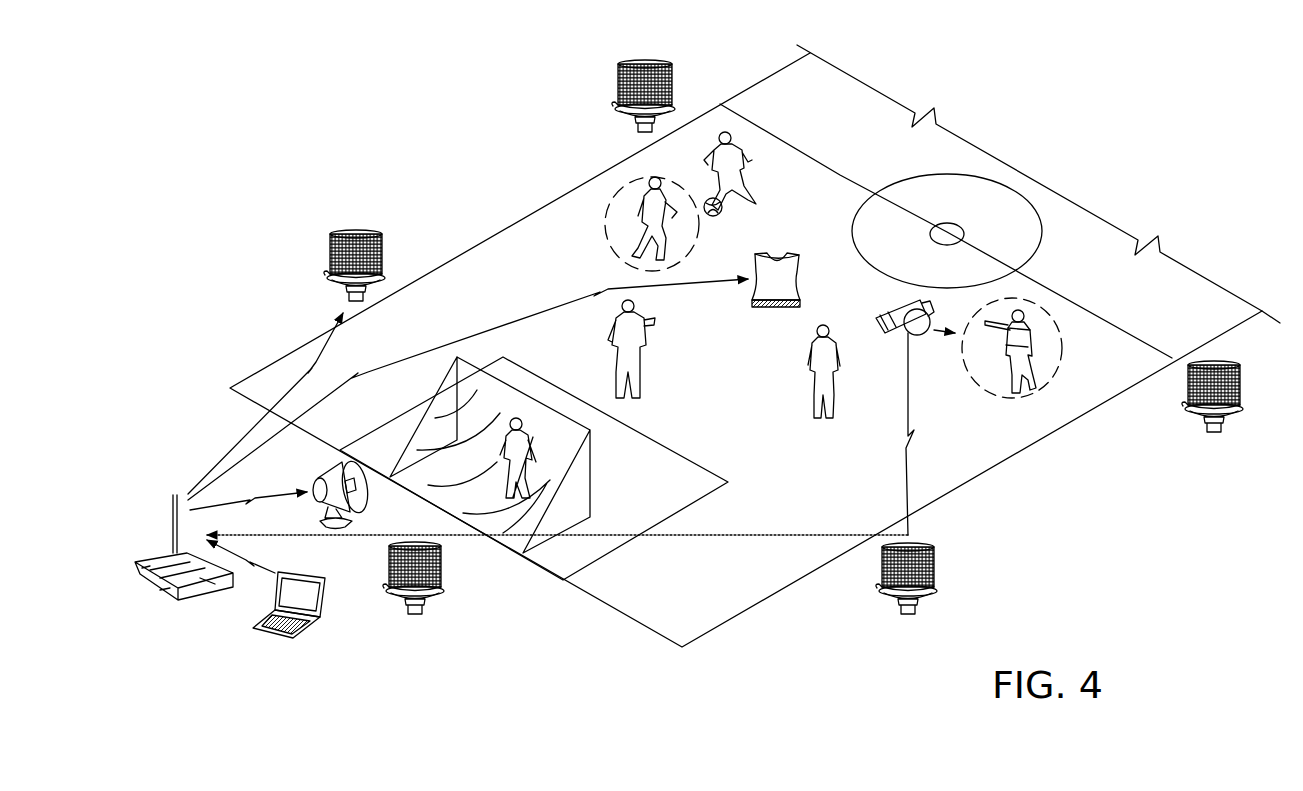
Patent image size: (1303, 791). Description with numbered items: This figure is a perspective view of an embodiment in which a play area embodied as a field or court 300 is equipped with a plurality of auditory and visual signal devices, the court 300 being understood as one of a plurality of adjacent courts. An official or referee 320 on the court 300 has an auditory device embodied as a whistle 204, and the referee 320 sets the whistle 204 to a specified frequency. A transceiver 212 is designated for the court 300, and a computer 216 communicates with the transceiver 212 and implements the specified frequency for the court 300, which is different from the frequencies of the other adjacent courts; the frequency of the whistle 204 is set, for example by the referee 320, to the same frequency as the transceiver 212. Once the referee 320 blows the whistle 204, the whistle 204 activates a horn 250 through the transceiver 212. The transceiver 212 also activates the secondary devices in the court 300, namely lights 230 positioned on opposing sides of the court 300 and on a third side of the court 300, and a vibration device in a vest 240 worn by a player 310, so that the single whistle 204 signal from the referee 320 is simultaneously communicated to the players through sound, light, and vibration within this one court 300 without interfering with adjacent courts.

The court 300 is at (1068, 78).
The lights 230 is at (633, 68).
The transceiver 212 is at (200, 595).
The computer 216 is at (310, 630).
The horn 250 is at (338, 478).
The vest 240 is at (754, 296).
The whistle 204 is at (876, 326).
The referee 320 is at (1036, 384).
The player 310 is at (630, 228).